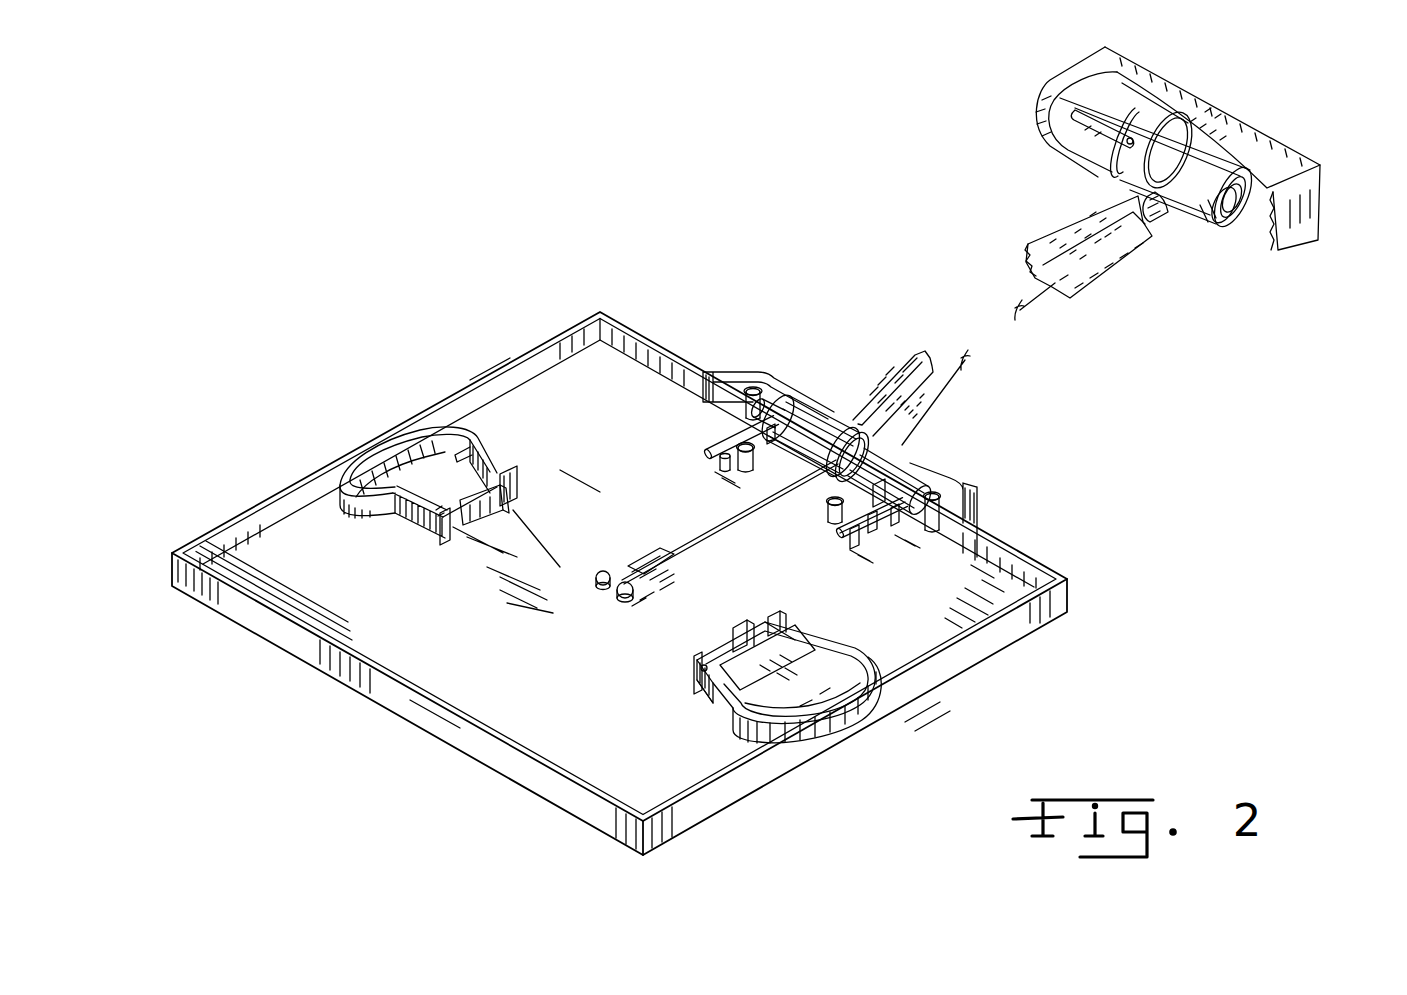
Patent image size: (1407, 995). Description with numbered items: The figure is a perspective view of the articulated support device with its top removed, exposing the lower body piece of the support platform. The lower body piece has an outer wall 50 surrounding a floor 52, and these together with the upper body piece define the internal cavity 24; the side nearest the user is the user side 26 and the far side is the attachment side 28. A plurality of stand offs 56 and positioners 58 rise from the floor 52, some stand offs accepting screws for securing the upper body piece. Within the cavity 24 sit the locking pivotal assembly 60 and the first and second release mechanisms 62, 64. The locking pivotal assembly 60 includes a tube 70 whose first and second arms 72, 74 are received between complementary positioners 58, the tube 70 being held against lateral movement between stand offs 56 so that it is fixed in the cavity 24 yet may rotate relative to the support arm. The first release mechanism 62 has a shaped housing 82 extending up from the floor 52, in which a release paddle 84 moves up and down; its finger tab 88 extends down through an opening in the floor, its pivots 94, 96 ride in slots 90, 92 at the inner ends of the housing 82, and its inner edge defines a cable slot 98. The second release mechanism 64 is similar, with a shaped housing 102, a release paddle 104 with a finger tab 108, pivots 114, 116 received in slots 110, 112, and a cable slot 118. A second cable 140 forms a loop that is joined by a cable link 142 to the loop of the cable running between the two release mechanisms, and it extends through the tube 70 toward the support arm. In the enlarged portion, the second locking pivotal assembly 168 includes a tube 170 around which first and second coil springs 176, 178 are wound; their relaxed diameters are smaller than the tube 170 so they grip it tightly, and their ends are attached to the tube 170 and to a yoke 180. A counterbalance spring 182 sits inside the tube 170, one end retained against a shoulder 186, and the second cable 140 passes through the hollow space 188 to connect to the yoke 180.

The internal cavity 24 is at (588, 382).
The user side 26 is at (344, 762).
The attachment side 28 is at (846, 448).
The outer wall 50 is at (1030, 572).
The floor 52 is at (446, 655).
The stand offs 56 is at (742, 390).
The positioners 58 is at (730, 448).
The locking pivotal assembly 60 is at (900, 455).
The first release mechanism 62 is at (766, 656).
The second release mechanism 64 is at (440, 479).
The tube 70 is at (895, 470).
The first arm 72 is at (840, 545).
The second arm 74 is at (750, 428).
The shaped housing 82 is at (862, 652).
The release paddle 84 is at (722, 657).
The finger tab 88 is at (812, 698).
The slot 90 is at (775, 612).
The slot 92 is at (682, 665).
The pivot 94 is at (782, 625).
The pivot 96 is at (703, 680).
The cable slot 98 is at (733, 635).
The shaped housing 102 is at (350, 510).
The release paddle 104 is at (462, 468).
The finger tab 108 is at (415, 470).
The slot 110 is at (512, 462).
The slot 112 is at (440, 500).
The pivot 114 is at (508, 480).
The pivot 116 is at (436, 520).
The cable slot 118 is at (492, 506).
The second cable 140 is at (730, 514).
The cable link 142 is at (684, 575).
The second locking pivotal assembly 168 is at (1190, 214).
The tube 170 is at (1215, 172).
The first coil spring 176 is at (1183, 142).
The second coil spring 178 is at (1172, 106).
The yoke 180 is at (1198, 170).
The counterbalance spring 182 is at (1243, 222).
The shoulder 186 is at (1204, 216).
The hollow space 188 is at (1110, 248).